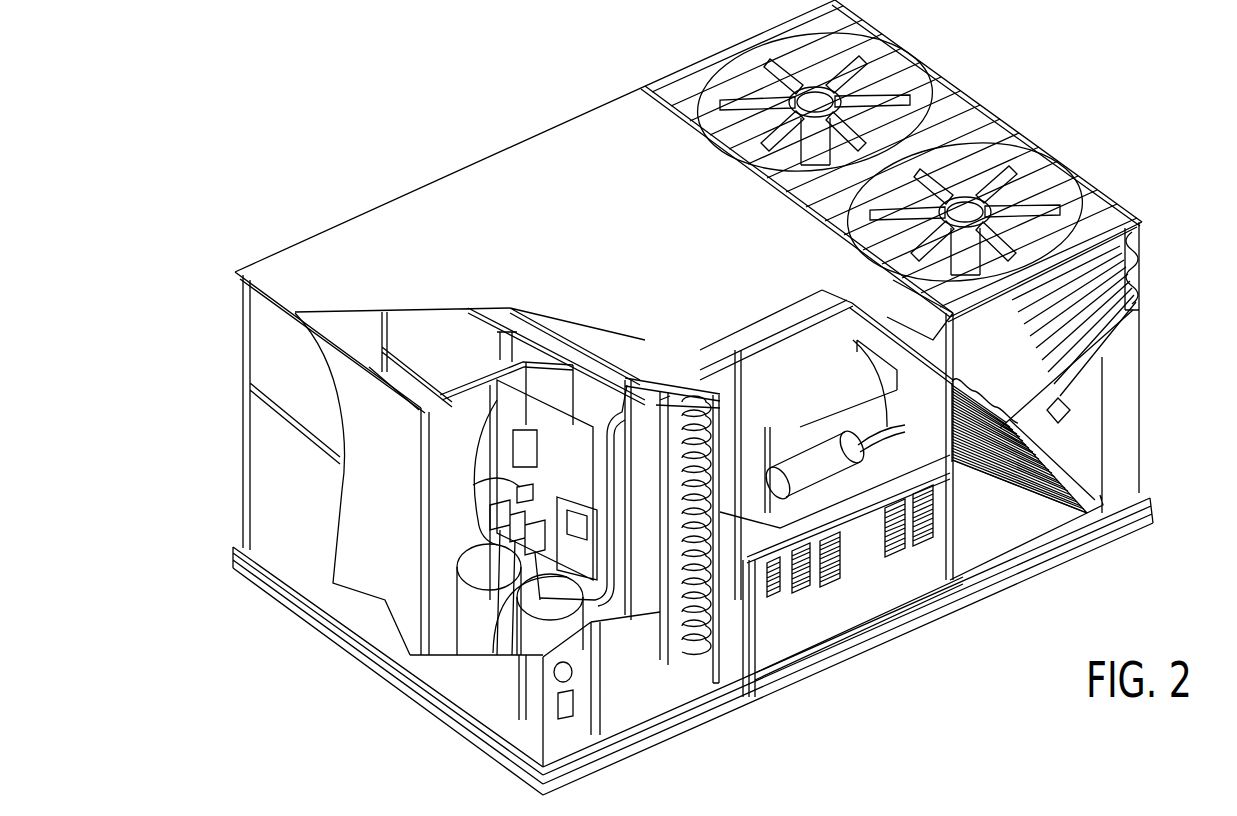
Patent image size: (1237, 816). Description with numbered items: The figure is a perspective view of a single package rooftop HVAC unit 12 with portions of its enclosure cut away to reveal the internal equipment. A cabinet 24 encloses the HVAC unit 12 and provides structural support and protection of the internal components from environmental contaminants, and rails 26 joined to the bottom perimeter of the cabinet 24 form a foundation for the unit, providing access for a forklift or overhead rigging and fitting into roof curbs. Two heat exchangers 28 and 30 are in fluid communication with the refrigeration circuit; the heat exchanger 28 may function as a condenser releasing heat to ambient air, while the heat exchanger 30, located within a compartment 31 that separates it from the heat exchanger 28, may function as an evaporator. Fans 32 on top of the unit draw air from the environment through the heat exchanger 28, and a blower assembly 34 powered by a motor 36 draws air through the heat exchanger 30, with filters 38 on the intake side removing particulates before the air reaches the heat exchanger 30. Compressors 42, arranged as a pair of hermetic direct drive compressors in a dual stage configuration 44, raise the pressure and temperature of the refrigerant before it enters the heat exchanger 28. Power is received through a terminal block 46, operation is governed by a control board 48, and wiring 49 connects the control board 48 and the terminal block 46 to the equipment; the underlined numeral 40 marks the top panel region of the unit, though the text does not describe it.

The HVAC unit 12 is at (421, 101).
The cabinet 24 is at (278, 518).
The rails 26 is at (307, 613).
The heat exchanger 28 is at (1139, 278).
The heat exchanger 30 is at (702, 617).
The compartment 31 is at (722, 453).
The fans 32 is at (948, 147).
The blower assembly 34 is at (883, 408).
The motor 36 is at (817, 457).
The filters 38 is at (650, 437).
The top panel 40 is at (639, 253).
The compressors 42 is at (466, 601).
The dual stage configuration 44 is at (459, 553).
The terminal block 46 is at (530, 495).
The control board 48 is at (580, 507).
The wiring 49 is at (667, 413).